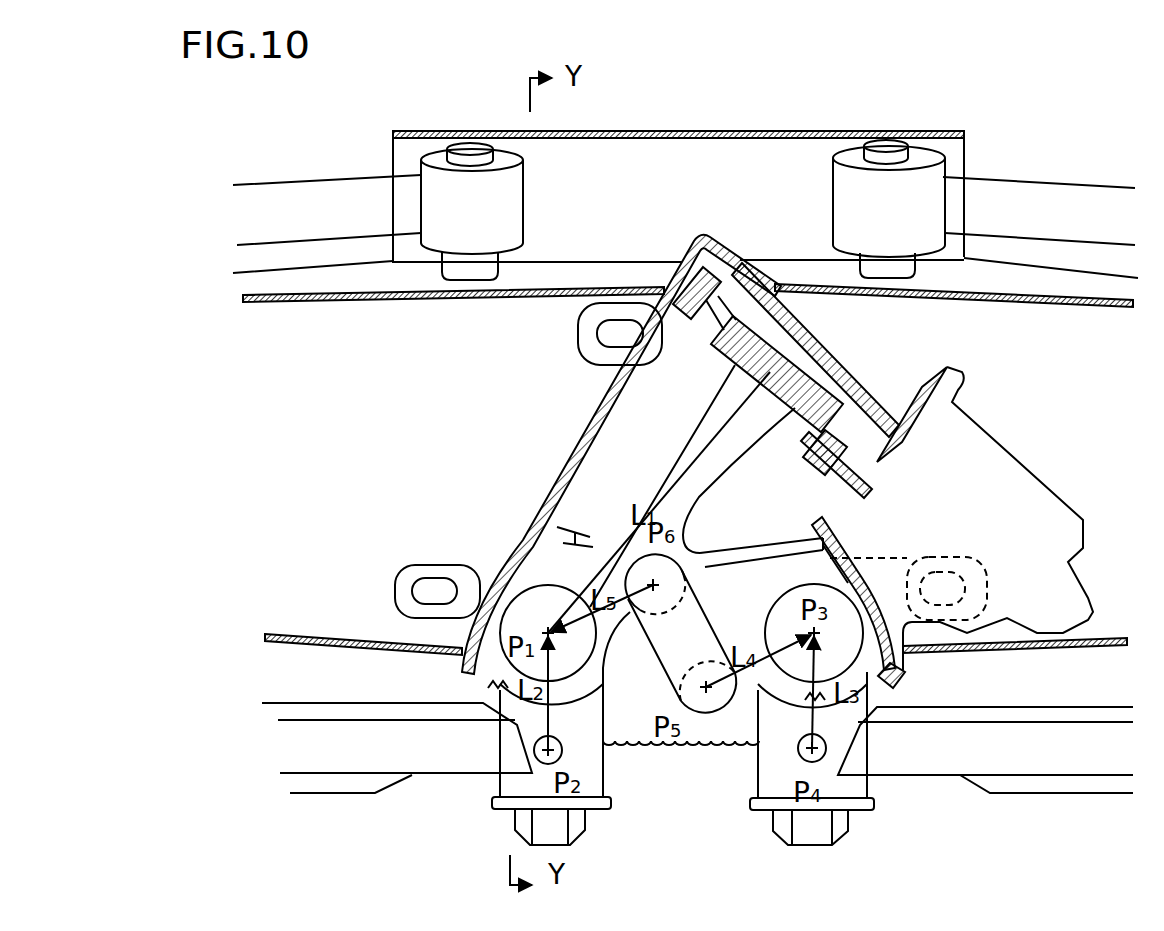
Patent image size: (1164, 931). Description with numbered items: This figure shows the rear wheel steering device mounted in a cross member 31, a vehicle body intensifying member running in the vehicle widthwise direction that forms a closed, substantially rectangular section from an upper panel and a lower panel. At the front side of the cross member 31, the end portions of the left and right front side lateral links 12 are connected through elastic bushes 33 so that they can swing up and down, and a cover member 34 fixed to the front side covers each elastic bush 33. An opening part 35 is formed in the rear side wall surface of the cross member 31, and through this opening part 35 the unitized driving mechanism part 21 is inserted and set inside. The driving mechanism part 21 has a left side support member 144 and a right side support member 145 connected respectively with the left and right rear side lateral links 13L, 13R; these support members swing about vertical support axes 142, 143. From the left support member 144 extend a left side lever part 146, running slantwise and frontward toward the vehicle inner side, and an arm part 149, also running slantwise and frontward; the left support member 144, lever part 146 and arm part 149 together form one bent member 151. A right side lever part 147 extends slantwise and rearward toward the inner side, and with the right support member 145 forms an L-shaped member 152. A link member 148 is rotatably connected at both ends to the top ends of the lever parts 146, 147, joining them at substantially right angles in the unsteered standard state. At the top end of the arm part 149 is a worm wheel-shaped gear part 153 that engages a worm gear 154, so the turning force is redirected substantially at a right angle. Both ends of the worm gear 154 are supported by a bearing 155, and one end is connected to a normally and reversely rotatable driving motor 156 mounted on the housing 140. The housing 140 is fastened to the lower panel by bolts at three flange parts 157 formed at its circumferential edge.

The front side lateral link 12 is at (281, 182).
The left rear side lateral link 13L is at (443, 762).
The right rear side lateral link 13R is at (1057, 754).
The driving mechanism part 21 is at (561, 411).
The cross member 31 is at (1088, 646).
The elastic bush 33 is at (526, 194).
The cover member 34 is at (736, 131).
The opening part 35 is at (907, 671).
The housing 140 is at (572, 467).
The support axis 142 is at (562, 562).
The support axis 143 is at (840, 565).
The left side support member 144 is at (590, 757).
The right side support member 145 is at (763, 750).
The left side lever part 146 is at (617, 621).
The right side lever part 147 is at (723, 637).
The link member 148 is at (660, 667).
The arm part 149 is at (669, 453).
The bent member 151 is at (547, 530).
The L-shaped member 152 is at (867, 593).
The gear part 153 is at (774, 338).
The worm gear 154 is at (827, 364).
The bearing 155 is at (730, 290).
The driving motor 156 is at (1027, 464).
The flange part 157 is at (577, 338).